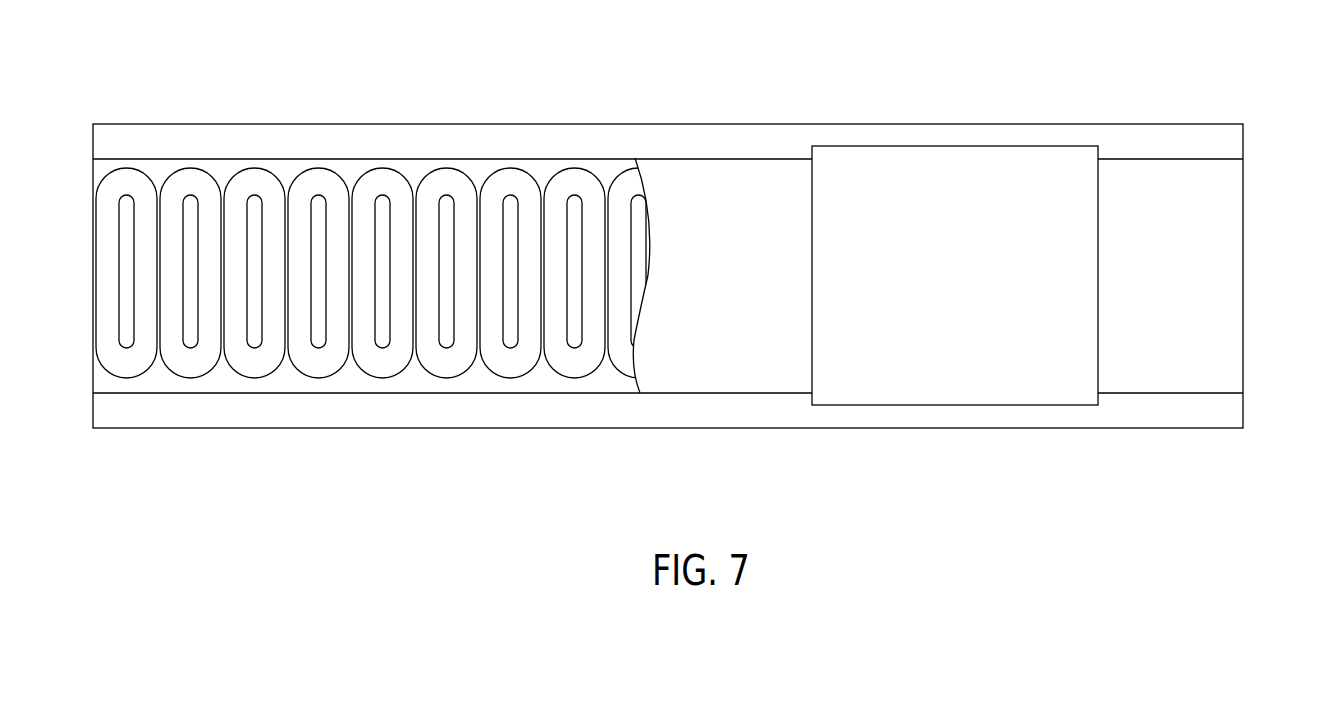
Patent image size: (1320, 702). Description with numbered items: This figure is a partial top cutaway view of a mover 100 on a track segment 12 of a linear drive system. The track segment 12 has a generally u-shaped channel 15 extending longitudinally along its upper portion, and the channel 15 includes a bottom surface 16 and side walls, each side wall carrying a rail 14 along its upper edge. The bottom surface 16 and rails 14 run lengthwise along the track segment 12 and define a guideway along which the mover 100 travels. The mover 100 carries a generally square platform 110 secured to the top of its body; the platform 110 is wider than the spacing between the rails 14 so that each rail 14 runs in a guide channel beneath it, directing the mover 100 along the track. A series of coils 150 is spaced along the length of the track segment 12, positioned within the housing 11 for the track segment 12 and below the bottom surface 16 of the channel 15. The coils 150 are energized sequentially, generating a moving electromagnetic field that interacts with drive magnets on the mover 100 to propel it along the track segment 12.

The housing 11 is at (704, 261).
The track segment 12 is at (675, 142).
The rail 14 is at (591, 142).
The channel 15 is at (1218, 323).
The bottom surface 16 is at (742, 281).
The mover 100 is at (937, 198).
The platform 110 is at (988, 277).
The coils 150 is at (318, 180).